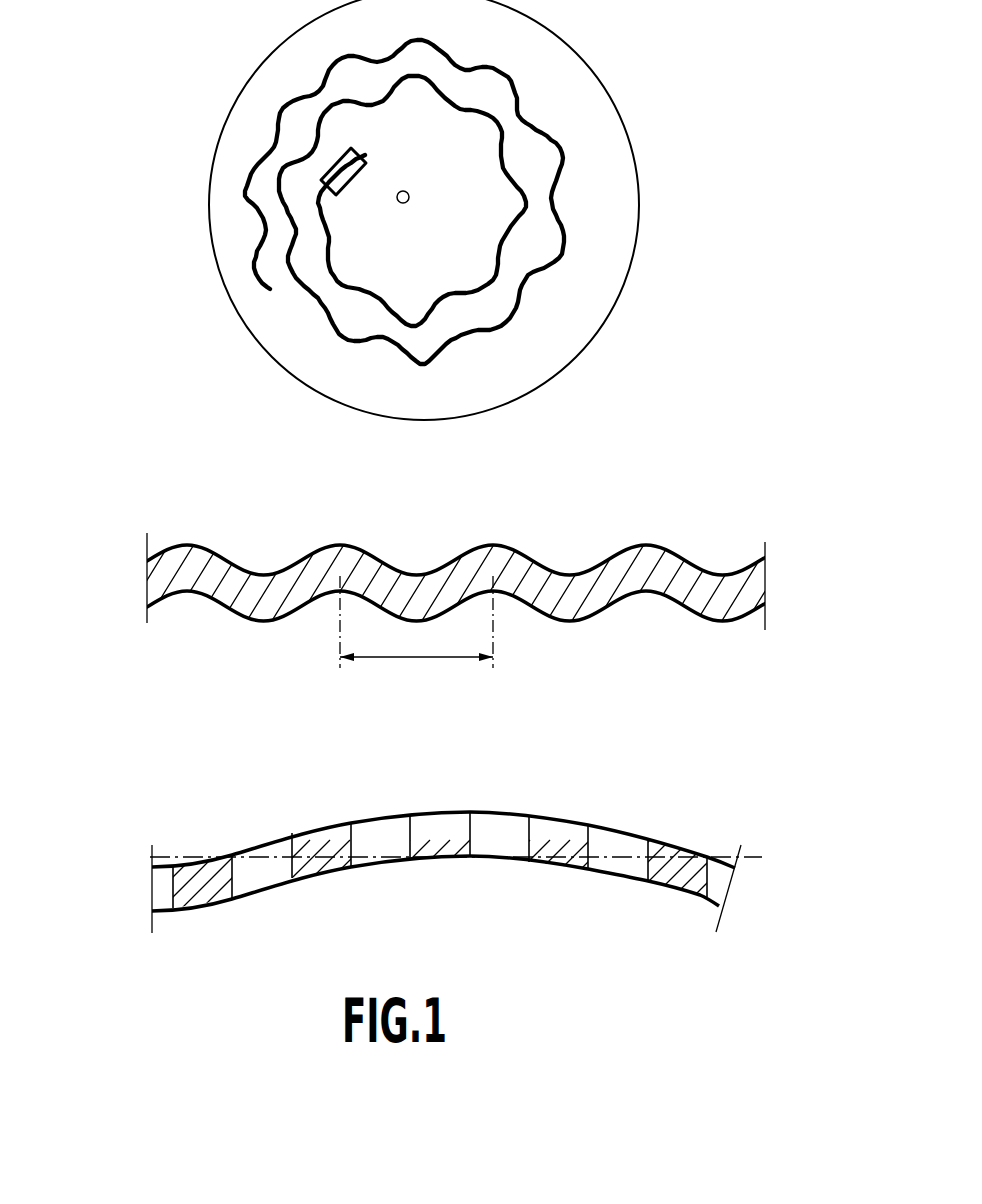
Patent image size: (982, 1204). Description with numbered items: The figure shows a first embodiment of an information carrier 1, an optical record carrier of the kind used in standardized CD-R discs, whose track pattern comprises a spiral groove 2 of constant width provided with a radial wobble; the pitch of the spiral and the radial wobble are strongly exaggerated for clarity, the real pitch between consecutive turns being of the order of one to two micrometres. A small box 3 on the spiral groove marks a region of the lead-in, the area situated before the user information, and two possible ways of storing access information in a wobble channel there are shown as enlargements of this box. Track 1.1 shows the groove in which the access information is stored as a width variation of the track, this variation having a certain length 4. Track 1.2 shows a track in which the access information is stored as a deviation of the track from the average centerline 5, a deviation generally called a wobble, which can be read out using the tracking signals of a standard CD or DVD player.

The information carrier 1 is at (577, 363).
The spiral groove 2 is at (277, 110).
The box 3 is at (356, 176).
The length 4 is at (416, 631).
The average centerline 5 is at (755, 848).
The track 1.1 is at (120, 575).
The track 1.2 is at (122, 884).